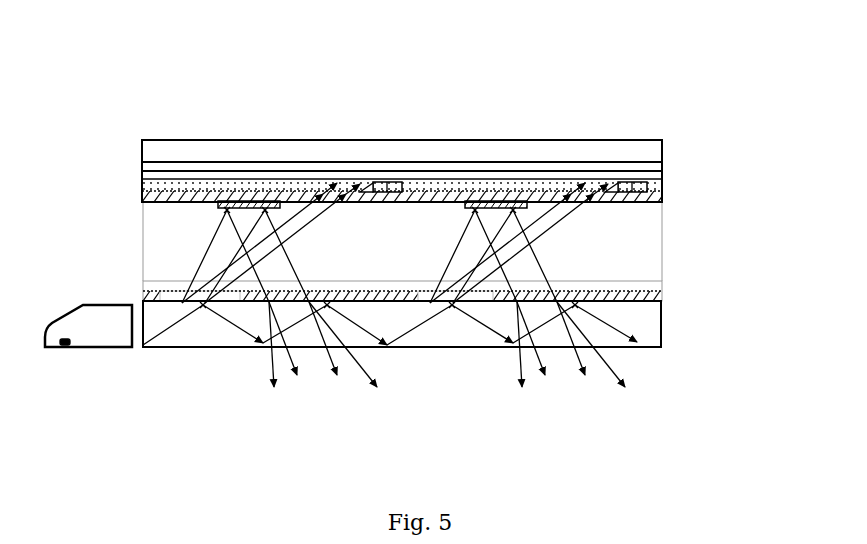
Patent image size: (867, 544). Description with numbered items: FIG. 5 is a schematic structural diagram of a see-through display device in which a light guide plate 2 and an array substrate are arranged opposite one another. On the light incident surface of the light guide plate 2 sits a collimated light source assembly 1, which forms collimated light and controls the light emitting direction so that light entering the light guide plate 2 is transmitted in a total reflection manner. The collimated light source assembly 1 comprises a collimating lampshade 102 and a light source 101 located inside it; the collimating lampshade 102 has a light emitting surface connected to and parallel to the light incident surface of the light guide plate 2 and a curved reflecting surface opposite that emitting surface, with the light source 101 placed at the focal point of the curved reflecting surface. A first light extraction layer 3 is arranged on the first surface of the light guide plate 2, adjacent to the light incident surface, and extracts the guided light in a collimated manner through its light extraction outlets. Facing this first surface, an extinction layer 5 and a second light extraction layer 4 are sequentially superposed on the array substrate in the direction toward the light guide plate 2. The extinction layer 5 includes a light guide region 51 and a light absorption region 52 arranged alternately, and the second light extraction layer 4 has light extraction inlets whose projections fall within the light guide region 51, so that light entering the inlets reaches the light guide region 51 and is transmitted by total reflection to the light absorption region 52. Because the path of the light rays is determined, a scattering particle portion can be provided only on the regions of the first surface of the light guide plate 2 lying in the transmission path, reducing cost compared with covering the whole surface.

The collimated light source assembly 1 is at (88, 376).
The light source 101 is at (105, 348).
The collimating lampshade 102 is at (65, 348).
The light guide plate 2 is at (661, 337).
The first light extraction layer 3 is at (662, 298).
The second light extraction layer 4 is at (662, 195).
The extinction layer 5 is at (432, 111).
The light guide region 51 is at (283, 200).
The light absorption region 52 is at (385, 182).